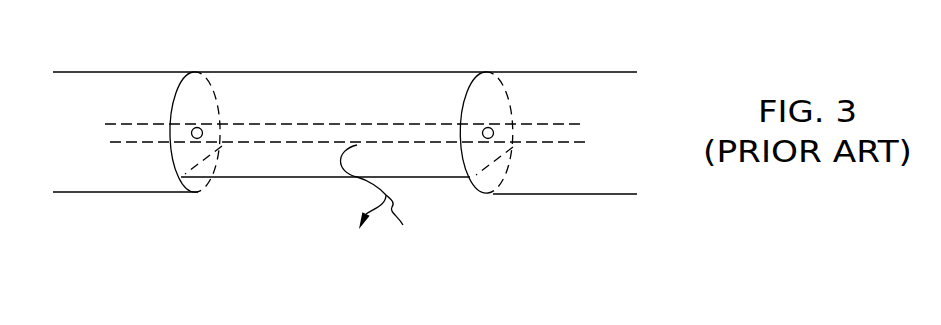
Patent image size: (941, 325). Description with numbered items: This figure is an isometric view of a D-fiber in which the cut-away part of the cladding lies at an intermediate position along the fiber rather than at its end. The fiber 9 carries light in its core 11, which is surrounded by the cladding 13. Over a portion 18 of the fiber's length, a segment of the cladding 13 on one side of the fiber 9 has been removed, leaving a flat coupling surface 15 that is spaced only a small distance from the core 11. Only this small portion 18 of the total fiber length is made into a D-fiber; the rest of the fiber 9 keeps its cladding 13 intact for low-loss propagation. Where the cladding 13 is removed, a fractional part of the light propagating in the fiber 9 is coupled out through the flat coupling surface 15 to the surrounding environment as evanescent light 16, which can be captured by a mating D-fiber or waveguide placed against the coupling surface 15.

The fiber 9 is at (568, 62).
The core 11 is at (198, 106).
The cladding 13 is at (430, 100).
The flat coupling surface 15 is at (290, 178).
The evanescent light 16 is at (366, 224).
The portion 18 is at (492, 66).